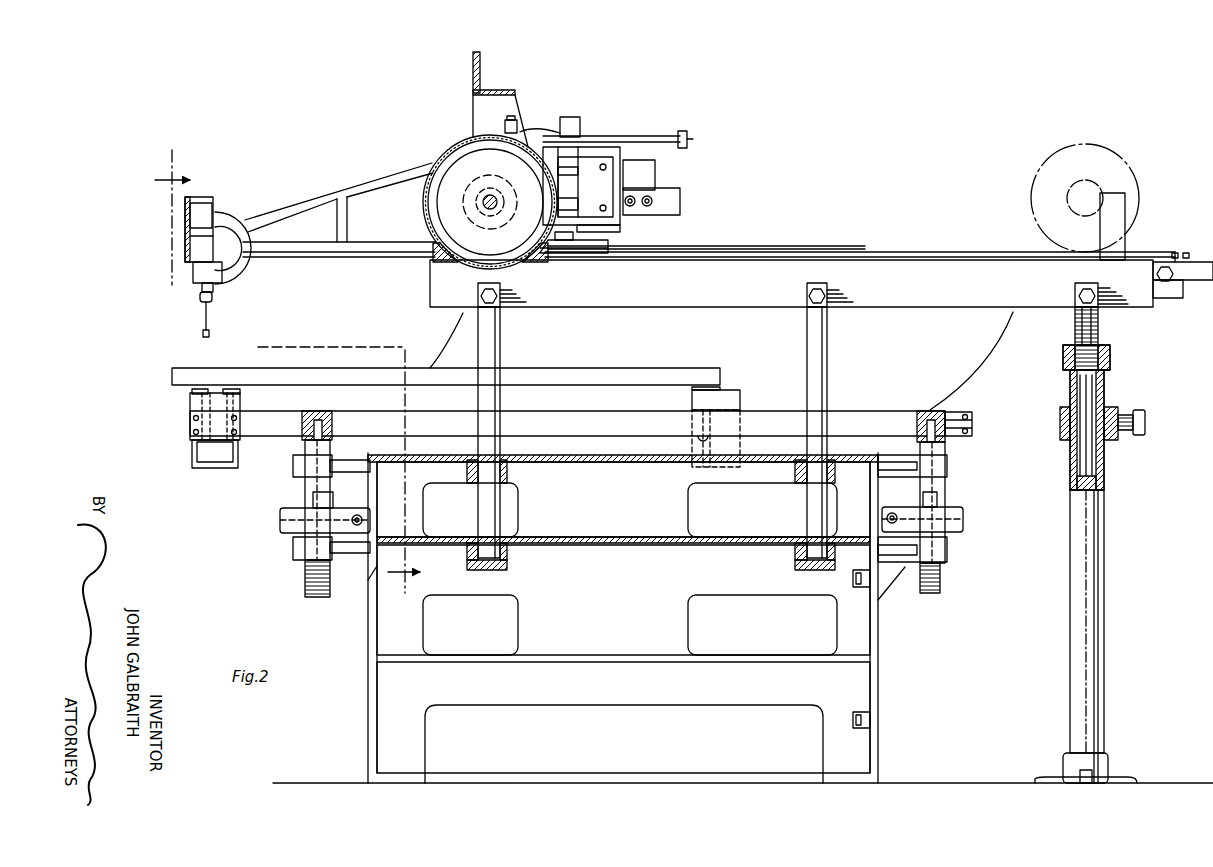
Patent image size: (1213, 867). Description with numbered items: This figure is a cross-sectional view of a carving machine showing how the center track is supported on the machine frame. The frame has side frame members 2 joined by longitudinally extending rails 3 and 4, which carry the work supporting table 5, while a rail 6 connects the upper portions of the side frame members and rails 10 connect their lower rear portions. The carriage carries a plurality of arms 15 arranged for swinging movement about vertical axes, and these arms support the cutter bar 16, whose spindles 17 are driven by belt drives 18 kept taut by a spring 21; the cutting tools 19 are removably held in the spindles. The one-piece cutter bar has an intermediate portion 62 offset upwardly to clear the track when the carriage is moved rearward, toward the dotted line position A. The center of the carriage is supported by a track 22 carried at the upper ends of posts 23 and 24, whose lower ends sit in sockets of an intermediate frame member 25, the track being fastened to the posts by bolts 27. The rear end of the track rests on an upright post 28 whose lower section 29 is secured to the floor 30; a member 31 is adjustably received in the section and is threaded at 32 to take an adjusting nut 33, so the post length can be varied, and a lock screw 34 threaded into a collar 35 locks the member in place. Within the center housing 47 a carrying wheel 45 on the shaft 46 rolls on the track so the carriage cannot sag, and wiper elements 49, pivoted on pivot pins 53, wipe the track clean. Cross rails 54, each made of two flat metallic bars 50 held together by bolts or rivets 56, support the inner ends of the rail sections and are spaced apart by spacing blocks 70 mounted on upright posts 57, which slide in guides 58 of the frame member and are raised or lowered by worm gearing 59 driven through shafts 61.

The side frame members 2 is at (517, 102).
The rail 3 is at (193, 456).
The rail 4 is at (740, 402).
The work supporting table 5 is at (168, 380).
The rail 6 is at (473, 63).
The rails 10 is at (853, 582).
The arms 15 is at (306, 188).
The cutter bar 16 is at (186, 256).
The spindles 17 is at (212, 297).
The belt drives 18 is at (372, 243).
The cutting tools 19 is at (209, 333).
The spring 21 is at (689, 134).
The track 22 is at (957, 307).
The post 23 is at (498, 357).
The post 24 is at (827, 368).
The intermediate frame member 25 is at (606, 716).
The bolts 27 is at (494, 300).
The upright post 28 is at (1105, 585).
The lower section 29 is at (1100, 718).
The floor 30 is at (1150, 783).
The member 31 is at (1100, 336).
The threaded portion 32 is at (1080, 340).
The adjusting nut 33 is at (1063, 362).
The lock screw 34 is at (1146, 420).
The collar 35 is at (1115, 440).
The carrying wheel 45 is at (457, 206).
The shaft 46 is at (480, 201).
The center housing 47 is at (443, 150).
The wiper elements 49 is at (550, 252).
The flat metallic bars 50 is at (840, 410).
The pivot pins 53 is at (432, 253).
The cross rails 54 is at (285, 443).
The bolts or rivets 56 is at (193, 432).
The upright posts 57 is at (305, 588).
The guides 58 is at (298, 465).
The worm gearing 59 is at (282, 520).
The shafts 61 is at (357, 515).
The intermediate portion 62 is at (207, 198).
The spacing blocks 70 is at (315, 411).
The dotted line position A is at (1094, 150).